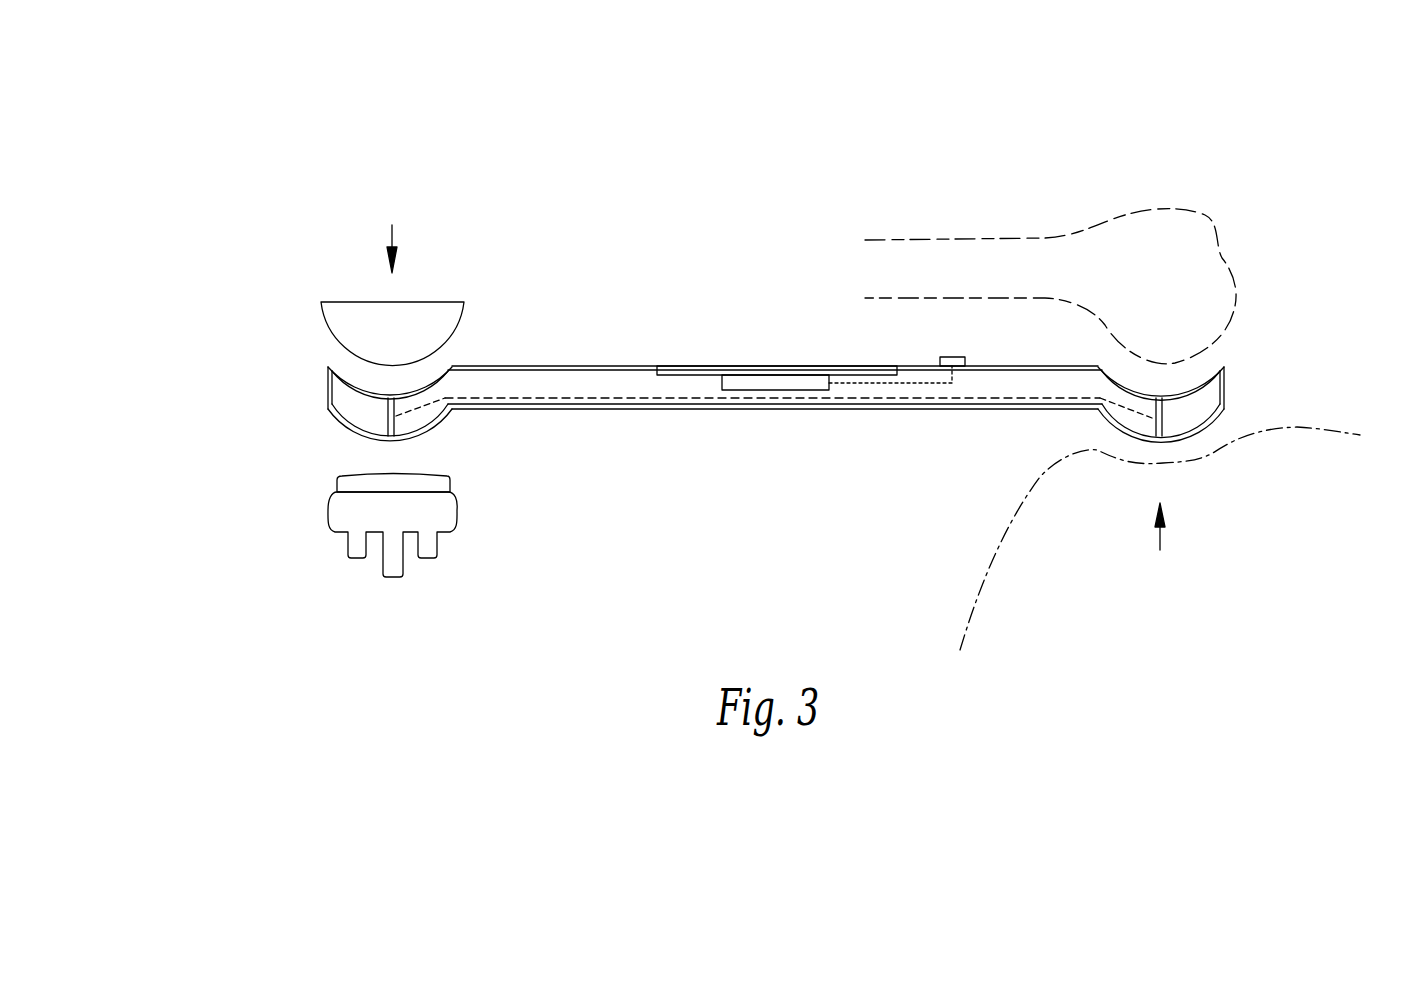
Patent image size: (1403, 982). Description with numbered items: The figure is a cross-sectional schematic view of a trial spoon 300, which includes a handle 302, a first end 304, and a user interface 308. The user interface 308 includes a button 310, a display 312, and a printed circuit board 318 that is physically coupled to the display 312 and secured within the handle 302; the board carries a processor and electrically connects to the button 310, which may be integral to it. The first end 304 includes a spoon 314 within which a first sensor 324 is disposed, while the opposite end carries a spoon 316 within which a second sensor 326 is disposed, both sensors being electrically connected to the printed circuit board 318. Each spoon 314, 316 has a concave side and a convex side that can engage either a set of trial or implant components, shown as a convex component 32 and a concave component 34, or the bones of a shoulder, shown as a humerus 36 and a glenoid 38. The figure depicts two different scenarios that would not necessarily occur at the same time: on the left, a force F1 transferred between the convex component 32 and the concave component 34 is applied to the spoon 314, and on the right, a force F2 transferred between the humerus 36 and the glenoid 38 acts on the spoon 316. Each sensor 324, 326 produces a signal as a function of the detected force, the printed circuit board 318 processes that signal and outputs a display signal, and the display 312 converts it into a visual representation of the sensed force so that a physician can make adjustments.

The trial spoon 300 is at (233, 97).
The convex component 32 is at (342, 307).
The concave component 34 is at (335, 498).
The humerus 36 is at (1181, 217).
The glenoid 38 is at (1020, 501).
The handle 302 is at (613, 382).
The first end 304 is at (445, 360).
The user interface 308 is at (733, 409).
The button 310 is at (953, 357).
The display 312 is at (689, 366).
The spoon 314 is at (343, 402).
The spoon 316 is at (1212, 397).
The printed circuit board 318 is at (803, 390).
The first sensor 324 is at (385, 433).
The second sensor 326 is at (1165, 427).
The force F1 is at (393, 238).
The force F2 is at (1160, 537).